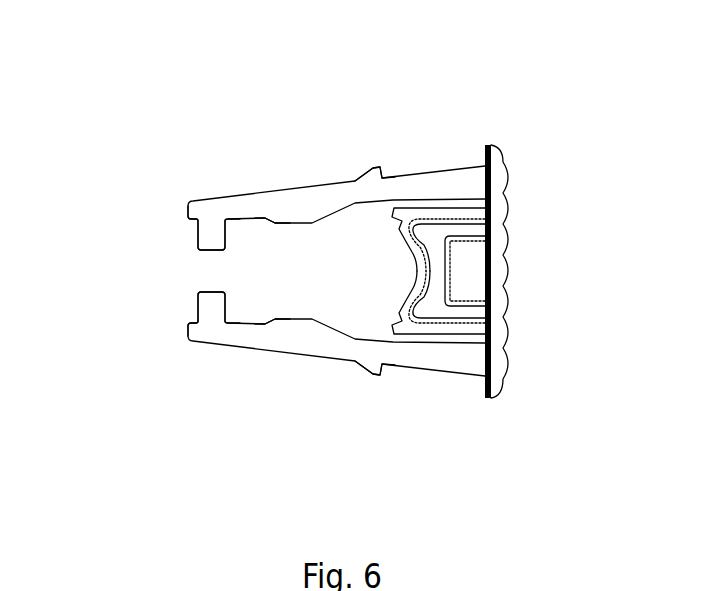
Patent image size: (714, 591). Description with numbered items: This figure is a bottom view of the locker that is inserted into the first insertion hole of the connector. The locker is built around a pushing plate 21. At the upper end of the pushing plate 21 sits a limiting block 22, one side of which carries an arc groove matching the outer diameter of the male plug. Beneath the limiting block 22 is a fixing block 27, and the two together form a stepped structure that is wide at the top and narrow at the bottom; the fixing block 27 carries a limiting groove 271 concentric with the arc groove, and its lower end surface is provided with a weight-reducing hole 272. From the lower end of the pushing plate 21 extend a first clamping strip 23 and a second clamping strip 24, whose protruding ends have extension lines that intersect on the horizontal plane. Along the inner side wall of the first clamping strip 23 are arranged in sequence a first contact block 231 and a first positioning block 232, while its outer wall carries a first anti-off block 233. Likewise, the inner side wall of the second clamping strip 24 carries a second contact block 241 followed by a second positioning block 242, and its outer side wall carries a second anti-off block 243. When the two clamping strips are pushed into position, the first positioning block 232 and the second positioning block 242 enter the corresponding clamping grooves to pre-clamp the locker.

The pushing plate 21 is at (510, 157).
The limiting block 22 is at (404, 244).
The first clamping strip 23 is at (261, 125).
The first contact block 231 is at (280, 206).
The first positioning block 232 is at (192, 232).
The first anti-off block 233 is at (371, 150).
The second clamping strip 24 is at (269, 415).
The second contact block 241 is at (269, 336).
The second positioning block 242 is at (187, 314).
The second anti-off block 243 is at (354, 381).
The fixing block 27 is at (534, 292).
The limiting groove 271 is at (437, 323).
The weight-reducing hole 272 is at (486, 284).